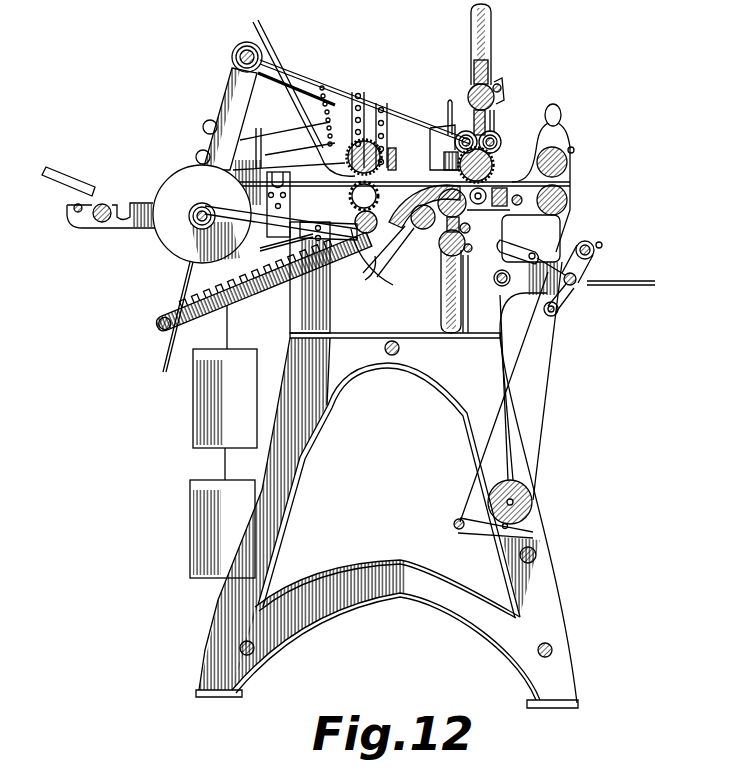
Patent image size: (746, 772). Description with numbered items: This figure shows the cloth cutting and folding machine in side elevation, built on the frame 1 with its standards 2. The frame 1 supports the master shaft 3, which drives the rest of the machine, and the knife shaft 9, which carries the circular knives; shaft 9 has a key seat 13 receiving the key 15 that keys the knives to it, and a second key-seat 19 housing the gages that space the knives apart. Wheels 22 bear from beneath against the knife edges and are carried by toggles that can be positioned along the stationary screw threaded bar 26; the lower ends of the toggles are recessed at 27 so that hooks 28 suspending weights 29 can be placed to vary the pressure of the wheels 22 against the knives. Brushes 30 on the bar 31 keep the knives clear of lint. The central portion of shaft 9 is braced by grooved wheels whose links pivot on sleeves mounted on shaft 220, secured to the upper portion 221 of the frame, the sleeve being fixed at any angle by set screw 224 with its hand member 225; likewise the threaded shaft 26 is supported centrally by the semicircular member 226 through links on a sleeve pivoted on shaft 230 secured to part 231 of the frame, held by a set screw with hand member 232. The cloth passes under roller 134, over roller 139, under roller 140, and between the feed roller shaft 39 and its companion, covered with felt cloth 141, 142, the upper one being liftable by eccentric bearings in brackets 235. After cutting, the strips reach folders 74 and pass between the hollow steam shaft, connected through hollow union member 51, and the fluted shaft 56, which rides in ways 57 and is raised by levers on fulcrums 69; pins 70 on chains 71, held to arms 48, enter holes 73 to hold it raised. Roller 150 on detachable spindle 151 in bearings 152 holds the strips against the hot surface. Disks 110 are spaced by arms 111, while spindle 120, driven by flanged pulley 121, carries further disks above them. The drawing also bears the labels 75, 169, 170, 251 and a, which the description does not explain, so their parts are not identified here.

The frame 1 is at (297, 315).
The standards 2 is at (247, 650).
The master shaft 3 is at (413, 217).
The shaft 9 is at (497, 153).
The key seat 13 is at (563, 117).
The key 15 is at (493, 167).
The second key-seat 19 is at (493, 134).
The wheels 22 is at (503, 220).
The stationary screw threaded bar or shaft 26 is at (458, 216).
The recesses 27 is at (228, 276).
The hooks 28 is at (262, 268).
The weights 29 is at (200, 410).
The brushes 30 is at (450, 108).
The bar 31 is at (433, 132).
The shaft 39 is at (568, 205).
The arm 48 is at (302, 72).
The hollow union member 51 is at (350, 195).
The shaft 56 is at (348, 170).
The ways 57 is at (365, 112).
The fulcrums 69 is at (396, 159).
The pins 70 is at (328, 152).
The chains 71 is at (328, 97).
The holes 73 is at (323, 115).
The folders 74 is at (384, 150).
The rail 75 is at (386, 115).
The disks 110 is at (170, 247).
The arms 111 is at (120, 186).
The spindle 120 is at (240, 70).
The flanged pulley 121 is at (238, 49).
The roller 134 is at (537, 558).
The roller 139 is at (533, 502).
The roller 140 is at (460, 530).
The felt cloth 141 is at (563, 220).
The felt cloth 142 is at (572, 172).
The roller 150 is at (417, 290).
The detachable spindle 151 is at (354, 277).
The bearings 152 is at (307, 249).
The link 169 is at (252, 138).
The bracket 170 is at (268, 176).
The shaft 220 is at (493, 86).
The upper portion 221 is at (490, 49).
The set screw 224 is at (503, 107).
The hand member 225 is at (501, 89).
The screw threaded semicircular member 226 is at (503, 237).
The shaft 230 is at (430, 295).
The part of frame 231 is at (458, 295).
The hand member 232 is at (513, 273).
The brackets 235 is at (572, 187).
The roller 251 is at (505, 253).
The lever a is at (502, 256).